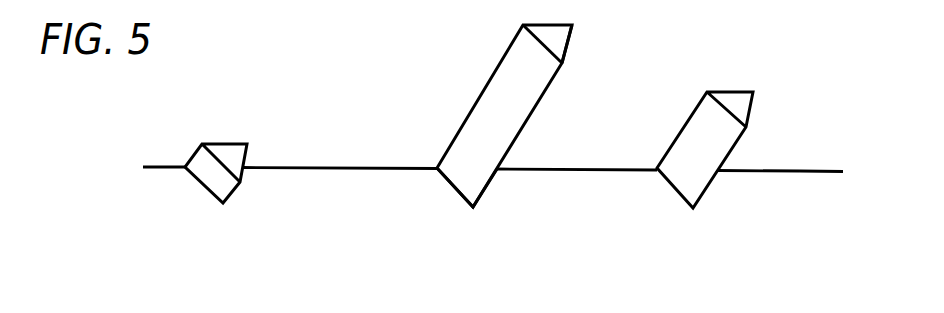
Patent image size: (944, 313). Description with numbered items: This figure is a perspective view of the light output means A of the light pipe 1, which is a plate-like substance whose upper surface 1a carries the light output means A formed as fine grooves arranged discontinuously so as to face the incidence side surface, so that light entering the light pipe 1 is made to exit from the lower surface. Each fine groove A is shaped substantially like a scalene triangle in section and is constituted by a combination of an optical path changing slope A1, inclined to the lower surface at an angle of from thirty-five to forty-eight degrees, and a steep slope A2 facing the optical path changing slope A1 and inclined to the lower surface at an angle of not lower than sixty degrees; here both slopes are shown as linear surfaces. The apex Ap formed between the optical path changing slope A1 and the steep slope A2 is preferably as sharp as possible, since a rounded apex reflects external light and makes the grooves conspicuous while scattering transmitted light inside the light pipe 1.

The light pipe 1 is at (775, 172).
The upper surface 1a is at (817, 171).
The light output means A is at (470, 118).
The optical path changing slope A1 is at (543, 49).
The steep slope A2 is at (572, 30).
The apex Ap is at (492, 183).